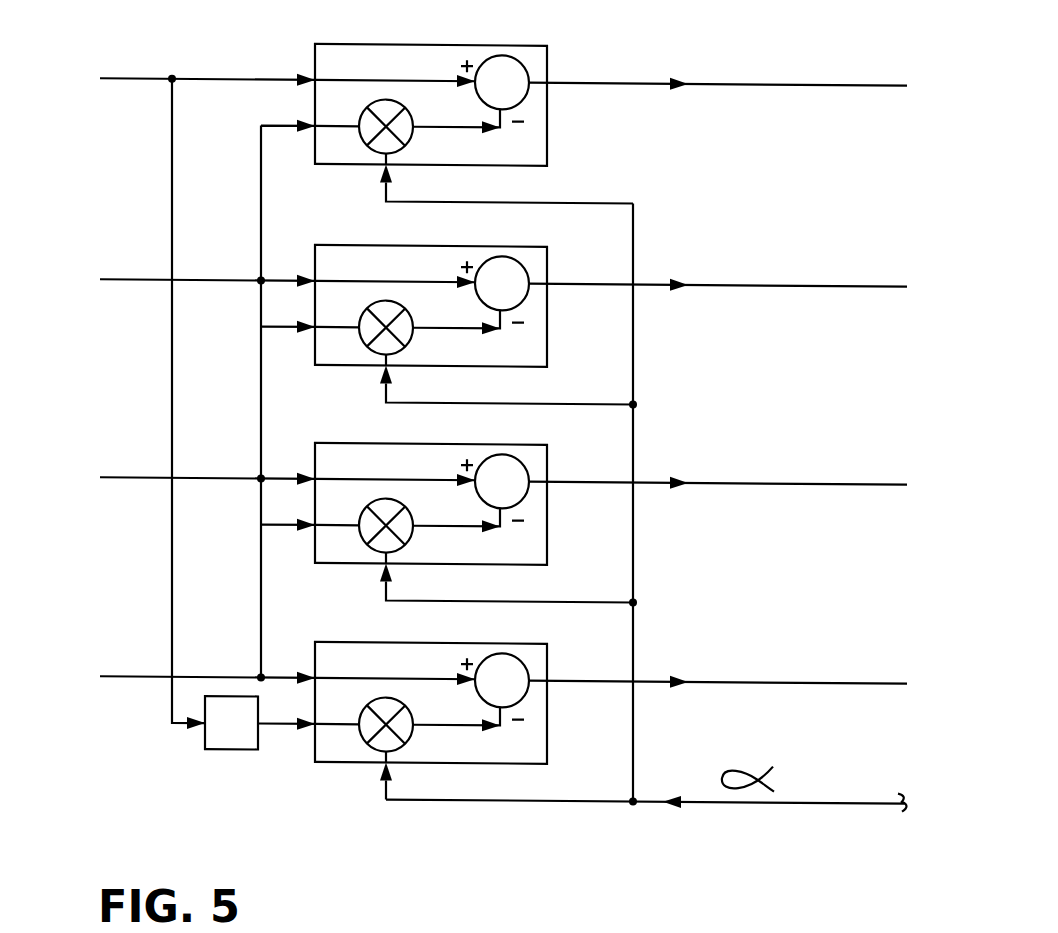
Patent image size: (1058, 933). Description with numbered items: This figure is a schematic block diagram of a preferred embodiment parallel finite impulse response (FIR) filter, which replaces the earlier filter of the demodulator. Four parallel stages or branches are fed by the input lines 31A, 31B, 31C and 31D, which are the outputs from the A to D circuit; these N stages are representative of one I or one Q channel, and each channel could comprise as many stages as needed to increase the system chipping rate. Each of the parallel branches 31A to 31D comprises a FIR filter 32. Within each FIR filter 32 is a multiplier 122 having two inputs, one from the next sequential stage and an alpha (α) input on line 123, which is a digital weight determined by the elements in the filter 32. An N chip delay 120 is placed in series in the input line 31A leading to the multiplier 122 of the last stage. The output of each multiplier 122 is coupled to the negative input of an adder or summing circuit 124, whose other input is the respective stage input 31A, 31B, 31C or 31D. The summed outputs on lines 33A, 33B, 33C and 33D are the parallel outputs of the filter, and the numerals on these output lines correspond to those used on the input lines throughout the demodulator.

The input line 31A is at (135, 80).
The input line 31B is at (135, 281).
The input line 31C is at (135, 479).
The input line 31D is at (135, 678).
The FIR filter 32 is at (547, 44).
The output line 33A is at (850, 86).
The output line 33B is at (850, 287).
The output line 33C is at (850, 485).
The output line 33D is at (850, 684).
The N chip delay 120 is at (233, 752).
The multiplier 122 is at (365, 147).
The alpha input line 123 is at (848, 799).
The summing circuit 124 is at (502, 54).